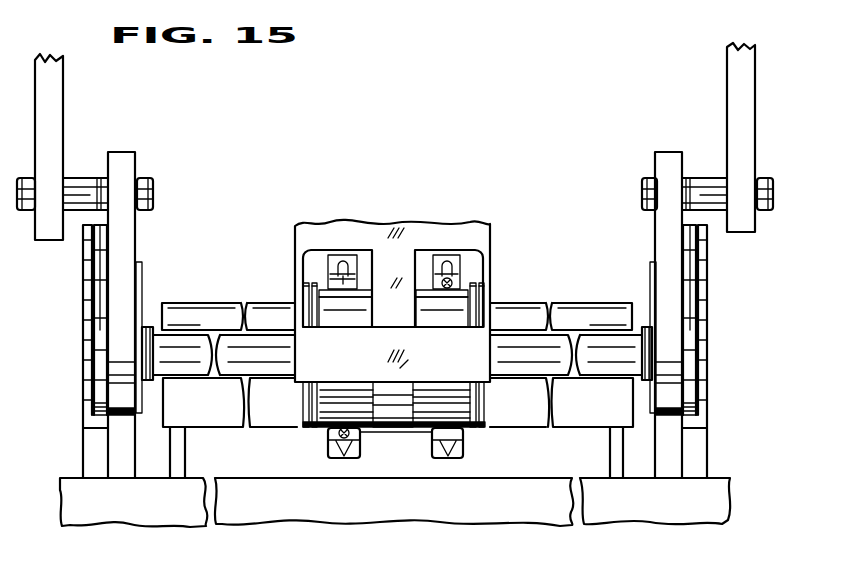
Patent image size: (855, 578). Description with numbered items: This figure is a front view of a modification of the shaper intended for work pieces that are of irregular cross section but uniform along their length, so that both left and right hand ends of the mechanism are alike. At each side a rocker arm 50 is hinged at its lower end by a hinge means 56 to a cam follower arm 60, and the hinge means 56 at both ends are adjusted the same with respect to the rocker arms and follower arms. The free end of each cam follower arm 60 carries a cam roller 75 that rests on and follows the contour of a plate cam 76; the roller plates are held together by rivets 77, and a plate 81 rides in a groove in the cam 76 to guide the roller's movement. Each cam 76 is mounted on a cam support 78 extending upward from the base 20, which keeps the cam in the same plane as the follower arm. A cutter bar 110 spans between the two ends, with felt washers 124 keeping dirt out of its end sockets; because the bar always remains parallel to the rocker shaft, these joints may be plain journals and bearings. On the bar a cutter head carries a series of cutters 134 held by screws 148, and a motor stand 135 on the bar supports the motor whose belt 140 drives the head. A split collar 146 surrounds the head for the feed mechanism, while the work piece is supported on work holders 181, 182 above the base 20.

The base 20 is at (532, 515).
The rocker arm 50 is at (64, 123).
The hinge means 56 is at (80, 168).
The cam follower arm 60 is at (127, 229).
The cam roller 75 is at (136, 412).
The plate cam 76 is at (83, 366).
The rivets 77 is at (141, 282).
The cam support 78 is at (87, 452).
The plate 81 is at (98, 428).
The cutter bar 110 is at (187, 371).
The felt washers 124 is at (147, 327).
The cutters 134 is at (462, 447).
The motor stand 135 is at (490, 233).
The belt 140 is at (302, 418).
The split collar 146 is at (382, 428).
The screws 148 is at (336, 429).
The support leg 181 is at (177, 458).
The work holder 182 is at (614, 457).